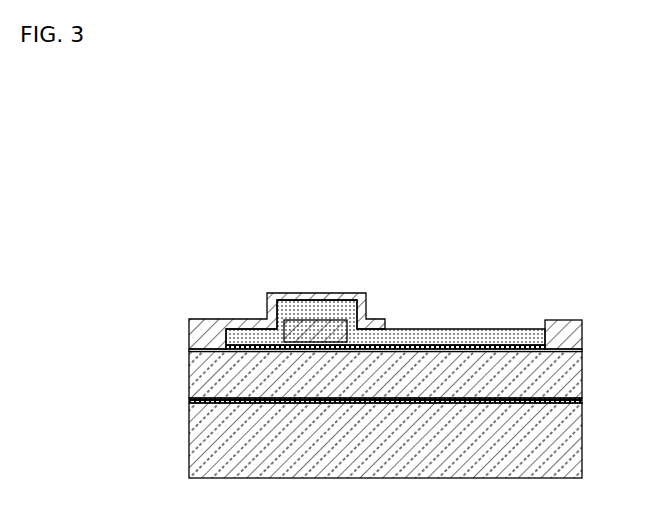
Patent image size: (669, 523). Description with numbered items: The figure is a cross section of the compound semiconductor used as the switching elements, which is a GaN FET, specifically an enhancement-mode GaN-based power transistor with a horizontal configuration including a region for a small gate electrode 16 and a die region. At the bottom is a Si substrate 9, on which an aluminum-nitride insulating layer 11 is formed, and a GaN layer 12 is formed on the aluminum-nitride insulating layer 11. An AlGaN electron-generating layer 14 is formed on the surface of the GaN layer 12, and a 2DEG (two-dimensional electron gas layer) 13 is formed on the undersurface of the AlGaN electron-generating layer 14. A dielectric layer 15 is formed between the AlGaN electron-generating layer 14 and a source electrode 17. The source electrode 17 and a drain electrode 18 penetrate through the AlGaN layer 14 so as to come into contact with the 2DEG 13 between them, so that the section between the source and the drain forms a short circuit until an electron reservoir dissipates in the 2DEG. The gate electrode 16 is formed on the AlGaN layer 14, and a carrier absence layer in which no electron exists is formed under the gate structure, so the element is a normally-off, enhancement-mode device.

The Si substrate 9 is at (572, 449).
The aluminum-nitride insulating layer 11 is at (580, 401).
The GaN layer 12 is at (578, 375).
The 2DEG (two-dimensional electron gas layer) 13 is at (542, 351).
The AlGaN electron-generating layer 14 is at (472, 347).
The dielectric layer 15 is at (425, 329).
The gate electrode 16 is at (323, 327).
The source electrode 17 is at (205, 327).
The drain electrode 18 is at (570, 325).